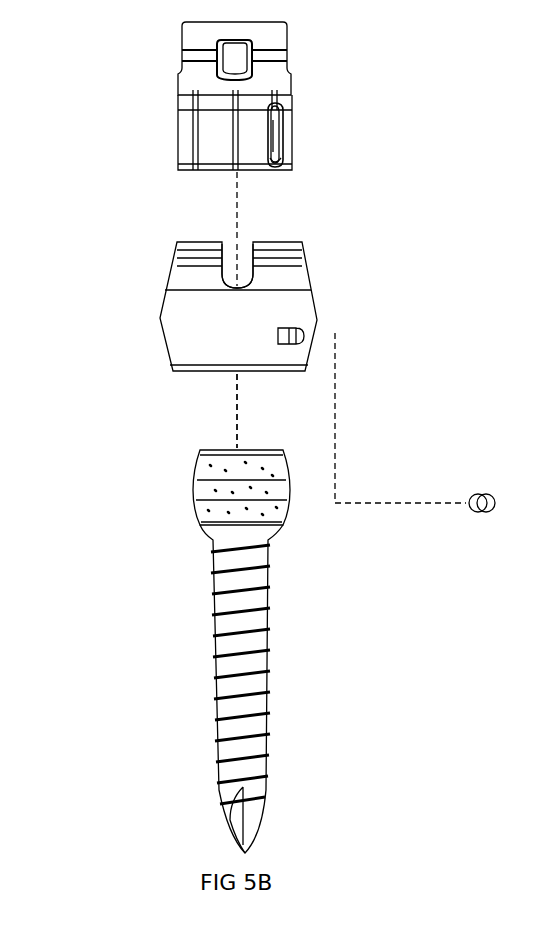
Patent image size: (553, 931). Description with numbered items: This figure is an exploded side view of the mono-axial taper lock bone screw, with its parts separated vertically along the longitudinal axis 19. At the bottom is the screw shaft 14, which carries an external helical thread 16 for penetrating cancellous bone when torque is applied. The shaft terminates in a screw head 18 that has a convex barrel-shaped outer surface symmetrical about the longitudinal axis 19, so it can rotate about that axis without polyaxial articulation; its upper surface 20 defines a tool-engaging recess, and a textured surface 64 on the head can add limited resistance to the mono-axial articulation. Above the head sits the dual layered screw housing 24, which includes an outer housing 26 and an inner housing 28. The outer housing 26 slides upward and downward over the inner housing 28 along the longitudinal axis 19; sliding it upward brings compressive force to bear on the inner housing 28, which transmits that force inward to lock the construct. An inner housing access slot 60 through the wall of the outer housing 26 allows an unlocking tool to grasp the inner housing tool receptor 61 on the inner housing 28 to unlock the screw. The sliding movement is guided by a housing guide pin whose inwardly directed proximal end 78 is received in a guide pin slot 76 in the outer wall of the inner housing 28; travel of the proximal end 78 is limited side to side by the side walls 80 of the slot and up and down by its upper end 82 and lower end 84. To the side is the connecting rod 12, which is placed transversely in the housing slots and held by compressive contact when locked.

The connecting rod 12 is at (325, 638).
The screw shaft 14 is at (252, 642).
The external helical thread 16 is at (270, 692).
The screw head 18 is at (195, 515).
The longitudinal axis 19 is at (238, 420).
The upper surface 20 is at (275, 450).
The screw housing 24 is at (298, 335).
The outer housing 26 is at (168, 325).
The inner housing 28 is at (178, 113).
The inner housing access slot 60 is at (253, 282).
The inner housing tool receptor 61 is at (240, 53).
The textured surface 64 is at (203, 470).
The guide pin slot 76 is at (280, 143).
The proximal end 78 is at (470, 506).
The side walls 80 is at (268, 152).
The upper end 82 is at (278, 113).
The lower end 84 is at (283, 167).